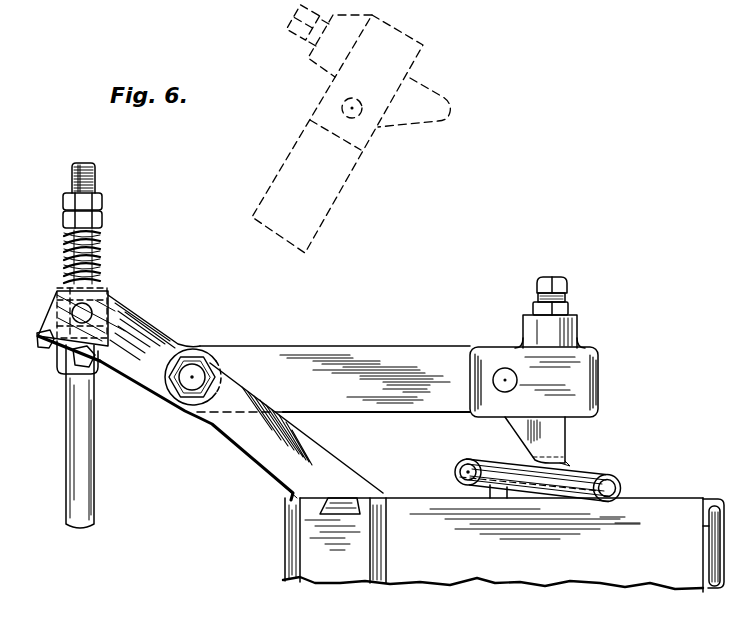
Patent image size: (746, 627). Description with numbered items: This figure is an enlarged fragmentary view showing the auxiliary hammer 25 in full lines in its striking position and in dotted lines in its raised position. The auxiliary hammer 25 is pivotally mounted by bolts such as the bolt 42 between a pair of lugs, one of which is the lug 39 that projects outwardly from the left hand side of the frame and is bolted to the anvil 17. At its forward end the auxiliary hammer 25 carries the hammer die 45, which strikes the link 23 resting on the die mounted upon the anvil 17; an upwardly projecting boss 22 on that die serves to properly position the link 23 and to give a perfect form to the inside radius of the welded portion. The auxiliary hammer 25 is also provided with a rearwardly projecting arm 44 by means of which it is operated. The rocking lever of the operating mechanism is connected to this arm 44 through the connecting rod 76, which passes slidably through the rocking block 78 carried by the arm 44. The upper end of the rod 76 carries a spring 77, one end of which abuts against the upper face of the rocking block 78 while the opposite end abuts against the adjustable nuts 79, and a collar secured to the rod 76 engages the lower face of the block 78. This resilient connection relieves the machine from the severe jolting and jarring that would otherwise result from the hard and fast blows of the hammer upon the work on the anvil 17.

The anvil 17 is at (573, 576).
The boss 22 is at (537, 470).
The link 23 is at (458, 468).
The auxiliary hammer 25 is at (427, 358).
The lug 39 is at (257, 453).
The bolt 42 is at (192, 377).
The rearwardly projecting arm 44 is at (158, 342).
The hammer die 45 is at (553, 440).
The connecting rod 76 is at (80, 440).
The spring 77 is at (68, 257).
The rocking block 78 is at (108, 290).
The adjustable nuts 79 is at (100, 221).